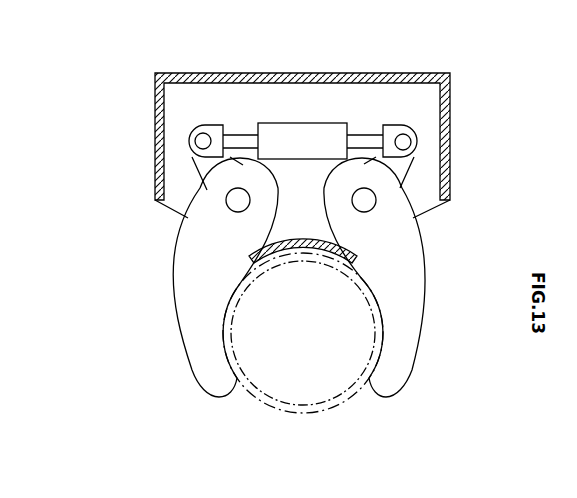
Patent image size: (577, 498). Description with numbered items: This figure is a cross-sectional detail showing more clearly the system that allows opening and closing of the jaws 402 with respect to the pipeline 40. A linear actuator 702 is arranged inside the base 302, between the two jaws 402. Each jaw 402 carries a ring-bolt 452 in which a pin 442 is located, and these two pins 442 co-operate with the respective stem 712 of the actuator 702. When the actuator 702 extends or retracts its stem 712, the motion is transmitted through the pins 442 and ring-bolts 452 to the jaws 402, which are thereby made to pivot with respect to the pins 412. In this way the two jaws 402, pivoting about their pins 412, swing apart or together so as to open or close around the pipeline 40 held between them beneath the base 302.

The base 302 is at (209, 73).
The stem 712 is at (248, 133).
The linear actuator 702 is at (332, 132).
The pin 442 is at (196, 138).
The ring-bolt 452 is at (203, 168).
The pin 412 is at (229, 198).
The jaw 402 is at (188, 269).
The pipeline 40 is at (290, 408).